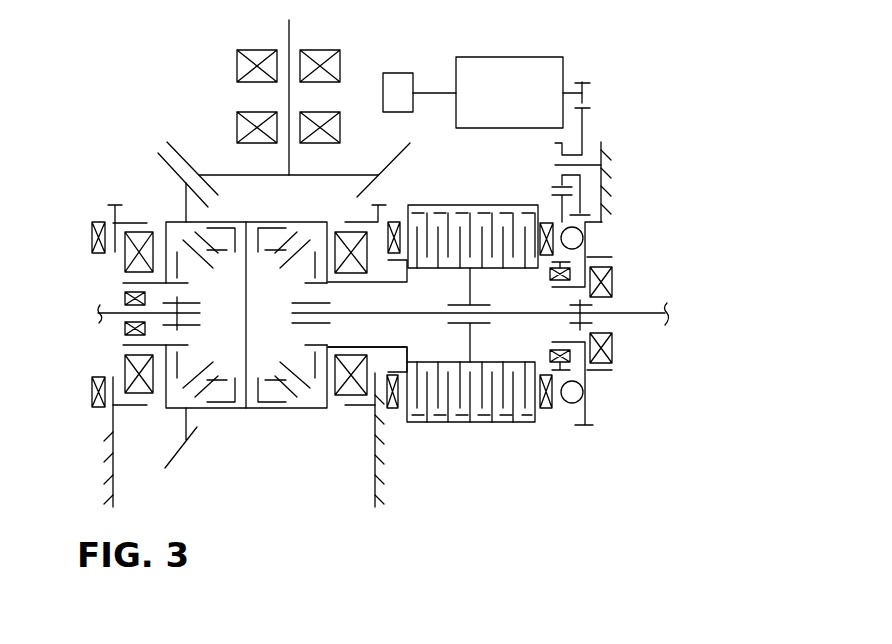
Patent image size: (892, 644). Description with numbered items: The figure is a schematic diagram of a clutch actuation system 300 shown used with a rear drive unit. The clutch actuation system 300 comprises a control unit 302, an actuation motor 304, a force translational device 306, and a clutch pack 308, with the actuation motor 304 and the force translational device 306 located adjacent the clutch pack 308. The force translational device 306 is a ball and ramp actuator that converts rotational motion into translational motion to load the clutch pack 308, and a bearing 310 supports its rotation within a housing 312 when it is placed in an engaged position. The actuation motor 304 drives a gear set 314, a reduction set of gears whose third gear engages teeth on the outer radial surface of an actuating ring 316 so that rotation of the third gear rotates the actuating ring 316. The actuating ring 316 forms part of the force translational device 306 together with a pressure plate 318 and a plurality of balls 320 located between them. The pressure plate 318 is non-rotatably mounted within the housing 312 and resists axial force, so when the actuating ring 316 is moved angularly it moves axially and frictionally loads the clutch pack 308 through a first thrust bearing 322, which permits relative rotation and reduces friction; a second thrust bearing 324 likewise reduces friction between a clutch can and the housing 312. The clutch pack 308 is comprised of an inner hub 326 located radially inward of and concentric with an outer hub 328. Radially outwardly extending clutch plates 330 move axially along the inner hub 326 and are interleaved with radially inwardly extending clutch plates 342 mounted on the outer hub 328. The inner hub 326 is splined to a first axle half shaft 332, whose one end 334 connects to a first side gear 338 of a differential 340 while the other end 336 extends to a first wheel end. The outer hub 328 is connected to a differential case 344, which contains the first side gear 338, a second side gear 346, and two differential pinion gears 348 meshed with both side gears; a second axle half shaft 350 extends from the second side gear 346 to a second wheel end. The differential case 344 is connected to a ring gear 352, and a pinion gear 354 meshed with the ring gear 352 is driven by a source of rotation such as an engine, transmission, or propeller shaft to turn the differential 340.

The clutch actuation system 300 is at (115, 81).
The control unit 302 is at (398, 73).
The actuation motor 304 is at (510, 57).
The force translational device 306 is at (555, 427).
The clutch pack 308 is at (480, 206).
The bearing 310 is at (552, 272).
The housing 312 is at (383, 492).
The gear set 314 is at (594, 129).
The actuating ring 316 is at (562, 203).
The pressure plate 318 is at (588, 230).
The balls 320 is at (575, 238).
The first thrust bearing 322 is at (545, 372).
The second thrust bearing 324 is at (392, 220).
The inner hub 326 is at (443, 362).
The outer hub 328 is at (483, 425).
The radially outwardly extending clutch plates 330 is at (438, 257).
The first axle half shaft 332 is at (643, 317).
The one end 334 is at (347, 347).
The other end 336 is at (626, 311).
The first side gear 338 is at (290, 345).
The differential 340 is at (212, 164).
The radially inwardly extending clutch plates 342 is at (445, 408).
The differential case 344 is at (273, 408).
The second side gear 346 is at (197, 303).
The differential pinion gears 348 is at (270, 248).
The second axle half shaft 350 is at (97, 316).
The ring gear 352 is at (162, 160).
The pinion gear 354 is at (371, 158).